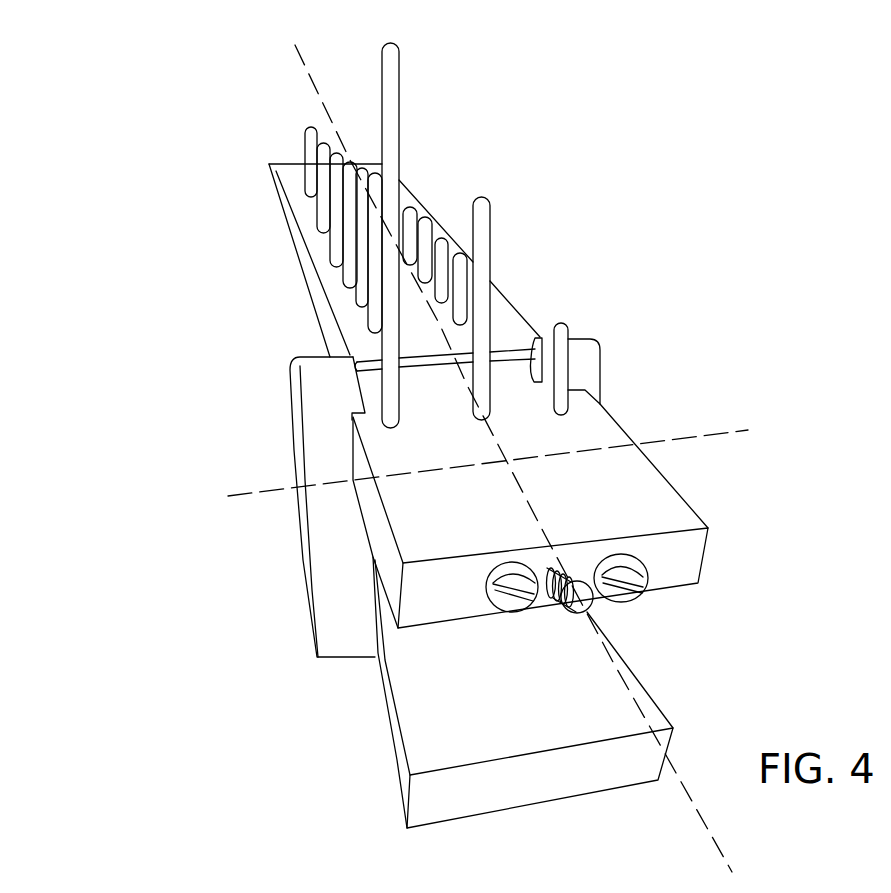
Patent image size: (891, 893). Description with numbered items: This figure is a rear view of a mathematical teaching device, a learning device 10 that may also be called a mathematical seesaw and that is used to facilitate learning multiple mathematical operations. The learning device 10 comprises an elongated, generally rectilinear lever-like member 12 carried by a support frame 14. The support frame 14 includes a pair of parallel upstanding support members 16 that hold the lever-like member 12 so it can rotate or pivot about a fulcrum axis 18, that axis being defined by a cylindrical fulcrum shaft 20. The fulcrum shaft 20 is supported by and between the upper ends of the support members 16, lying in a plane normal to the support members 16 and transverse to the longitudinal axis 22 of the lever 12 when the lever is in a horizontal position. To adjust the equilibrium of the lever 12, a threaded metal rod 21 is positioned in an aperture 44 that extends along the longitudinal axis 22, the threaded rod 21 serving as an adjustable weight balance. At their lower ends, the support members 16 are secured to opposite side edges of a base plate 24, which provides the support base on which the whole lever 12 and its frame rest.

The learning device 10 is at (137, 260).
The lever-like member 12 is at (517, 318).
The support frame 14 is at (317, 637).
The support members 16 is at (293, 357).
The fulcrum axis 18 is at (245, 490).
The fulcrum shaft 20 is at (432, 375).
The threaded metal rod 21 is at (578, 598).
The longitudinal axis 22 is at (712, 842).
The base plate 24 is at (408, 775).
The aperture 44 is at (547, 605).